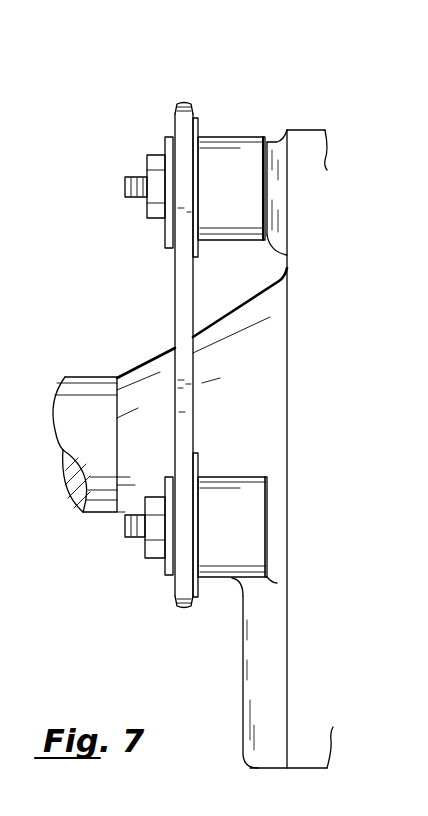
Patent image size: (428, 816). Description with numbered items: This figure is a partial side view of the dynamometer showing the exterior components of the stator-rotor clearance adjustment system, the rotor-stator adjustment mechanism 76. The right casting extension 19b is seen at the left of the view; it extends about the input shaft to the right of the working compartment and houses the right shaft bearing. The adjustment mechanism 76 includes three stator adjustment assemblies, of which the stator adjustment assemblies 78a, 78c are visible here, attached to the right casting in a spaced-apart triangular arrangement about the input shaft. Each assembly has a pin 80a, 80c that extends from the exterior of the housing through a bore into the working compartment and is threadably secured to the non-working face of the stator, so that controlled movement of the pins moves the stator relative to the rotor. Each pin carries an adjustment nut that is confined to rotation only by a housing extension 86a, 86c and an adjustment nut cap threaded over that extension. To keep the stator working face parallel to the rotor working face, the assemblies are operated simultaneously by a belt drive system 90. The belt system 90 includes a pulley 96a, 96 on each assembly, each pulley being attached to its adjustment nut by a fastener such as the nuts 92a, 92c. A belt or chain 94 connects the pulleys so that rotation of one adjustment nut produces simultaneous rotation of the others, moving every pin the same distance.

The rotor-stator adjustment mechanism 76 is at (173, 70).
The stator adjustment assembly 78a is at (162, 133).
The stator adjustment assembly 78c is at (161, 614).
The pin 80a is at (125, 187).
The pin 80c is at (125, 527).
The housing extension 86a is at (268, 145).
The housing extension 86c is at (273, 478).
The belt drive system 90 is at (168, 284).
The nut 92a is at (150, 212).
The nut 92c is at (148, 560).
The belt or chain 94 is at (186, 292).
The pulley 96 is at (199, 608).
The pulley 96a is at (194, 118).
The right casting extension 19b is at (157, 376).